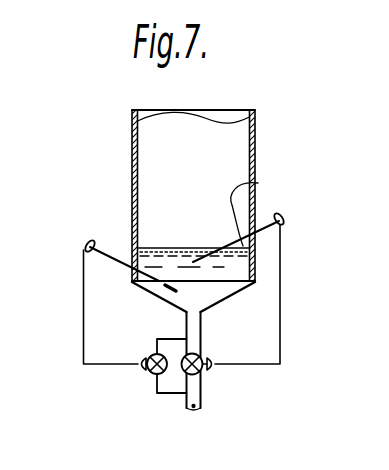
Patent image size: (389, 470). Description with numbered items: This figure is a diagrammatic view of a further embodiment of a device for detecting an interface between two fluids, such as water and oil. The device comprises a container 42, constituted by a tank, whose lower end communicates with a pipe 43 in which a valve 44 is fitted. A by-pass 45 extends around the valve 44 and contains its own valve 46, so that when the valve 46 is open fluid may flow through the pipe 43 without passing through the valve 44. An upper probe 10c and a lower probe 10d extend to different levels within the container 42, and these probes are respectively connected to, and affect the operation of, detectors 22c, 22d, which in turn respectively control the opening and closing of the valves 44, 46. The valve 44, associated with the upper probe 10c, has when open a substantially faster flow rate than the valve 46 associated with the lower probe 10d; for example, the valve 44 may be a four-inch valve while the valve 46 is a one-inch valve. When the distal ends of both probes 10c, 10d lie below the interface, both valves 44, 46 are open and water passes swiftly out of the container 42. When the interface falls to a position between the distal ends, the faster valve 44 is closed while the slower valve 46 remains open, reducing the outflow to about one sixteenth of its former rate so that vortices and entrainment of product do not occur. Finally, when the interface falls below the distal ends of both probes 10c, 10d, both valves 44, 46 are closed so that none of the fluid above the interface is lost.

The container 42 is at (237, 139).
The pipe 43 is at (176, 246).
The upper probe 10c is at (258, 183).
The lower probe 10d is at (116, 254).
The detector 22c is at (283, 216).
The detector 22d is at (83, 242).
The valve 44 is at (198, 375).
The by-pass 45 is at (157, 390).
The valve 46 is at (156, 373).